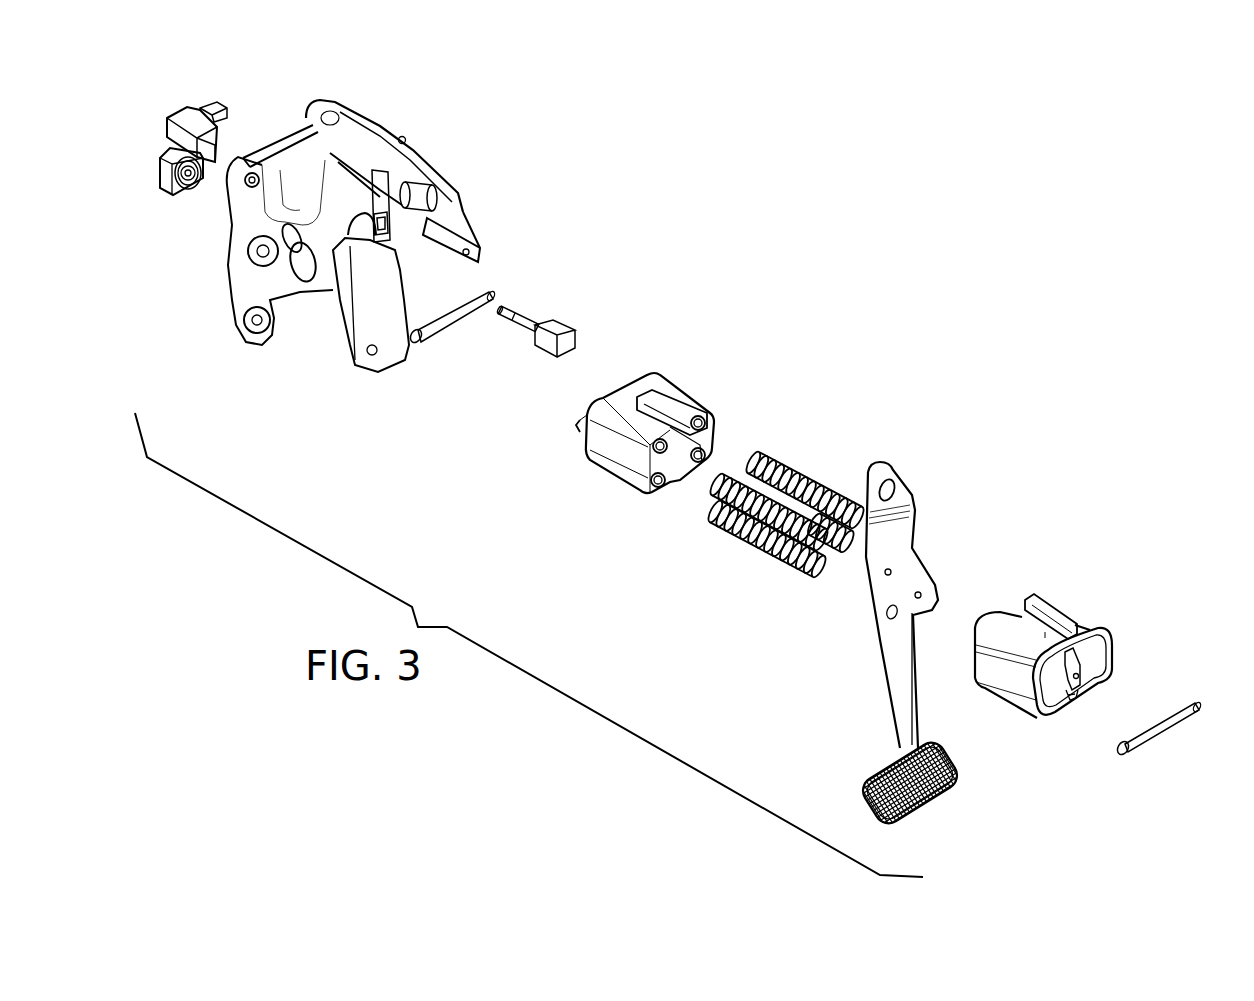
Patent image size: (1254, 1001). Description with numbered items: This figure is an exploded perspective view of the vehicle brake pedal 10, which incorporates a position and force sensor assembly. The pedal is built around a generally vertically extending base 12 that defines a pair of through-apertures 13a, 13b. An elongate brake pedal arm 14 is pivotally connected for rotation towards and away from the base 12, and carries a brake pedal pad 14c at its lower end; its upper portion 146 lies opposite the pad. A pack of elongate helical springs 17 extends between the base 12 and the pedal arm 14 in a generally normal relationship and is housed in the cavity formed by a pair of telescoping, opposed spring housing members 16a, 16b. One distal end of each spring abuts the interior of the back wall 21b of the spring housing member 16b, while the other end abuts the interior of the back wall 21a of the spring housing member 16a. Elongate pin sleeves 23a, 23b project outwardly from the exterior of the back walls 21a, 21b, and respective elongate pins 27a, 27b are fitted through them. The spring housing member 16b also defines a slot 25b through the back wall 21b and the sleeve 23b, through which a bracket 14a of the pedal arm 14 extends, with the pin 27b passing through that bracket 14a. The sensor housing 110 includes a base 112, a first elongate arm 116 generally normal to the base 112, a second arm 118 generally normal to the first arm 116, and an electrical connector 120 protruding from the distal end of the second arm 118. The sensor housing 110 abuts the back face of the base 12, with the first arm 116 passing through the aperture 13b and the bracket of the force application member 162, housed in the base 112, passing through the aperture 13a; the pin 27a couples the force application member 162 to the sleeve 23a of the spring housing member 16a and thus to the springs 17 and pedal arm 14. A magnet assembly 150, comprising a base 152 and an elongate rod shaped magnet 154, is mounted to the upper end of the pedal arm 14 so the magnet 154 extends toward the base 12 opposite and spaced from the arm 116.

The vehicle brake pedal 10 is at (668, 196).
The base 12 is at (243, 218).
The through-aperture 13a is at (307, 270).
The through-aperture 13b is at (260, 283).
The brake pedal arm 14 is at (895, 648).
The bracket 14a is at (910, 580).
The brake pedal pad 14c is at (958, 790).
The pedal arm upper portion 146 is at (905, 510).
The spring housing member 16a is at (688, 403).
The spring housing member 16b is at (1063, 615).
The helical springs 17 is at (820, 478).
The back wall 21a is at (608, 392).
The back wall 21b is at (1098, 642).
The pin sleeve 23a is at (582, 422).
The pin sleeve 23b is at (1101, 657).
The slot 25b is at (1078, 690).
The pin 27a is at (438, 327).
The pin 27b is at (1170, 720).
The sensor housing 110 is at (181, 100).
The base 112 is at (165, 173).
The first elongate arm 116 is at (214, 142).
The second arm 118 is at (196, 116).
The electrical connector 120 is at (215, 108).
The magnet assembly 150 is at (547, 327).
The base 152 is at (563, 330).
The rod shaped magnet 154 is at (507, 317).
The force application member 162 is at (193, 195).